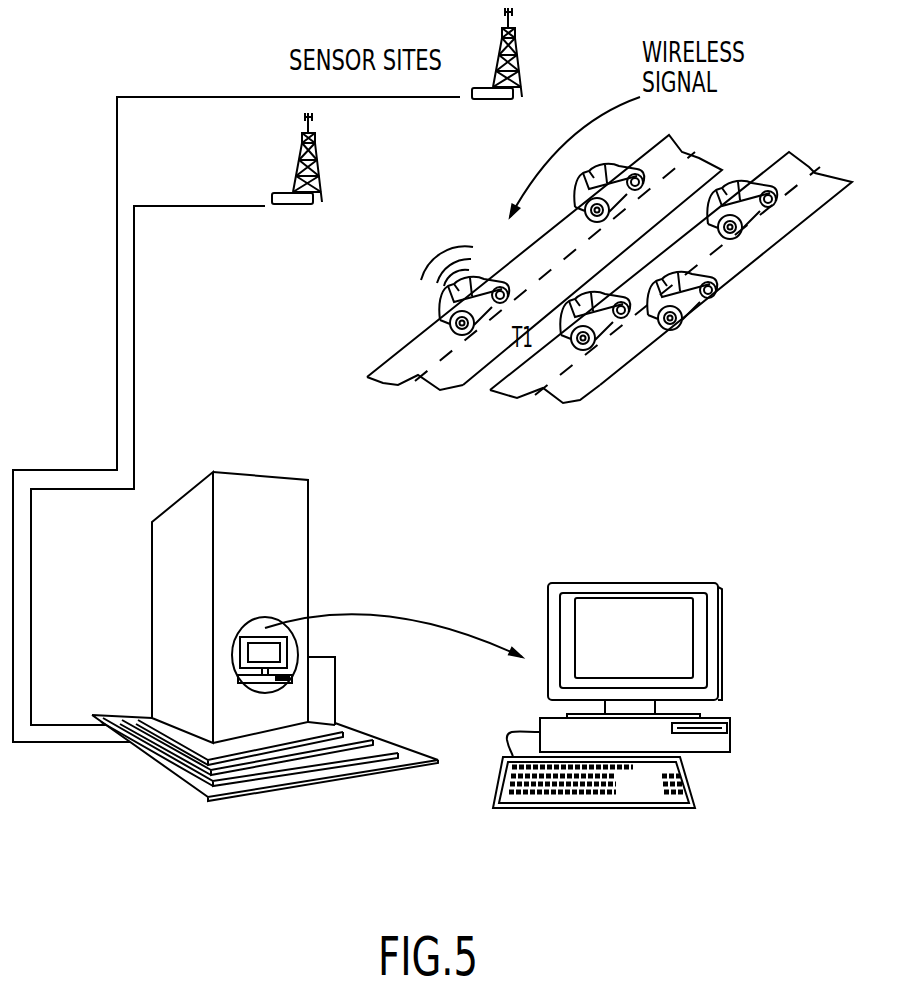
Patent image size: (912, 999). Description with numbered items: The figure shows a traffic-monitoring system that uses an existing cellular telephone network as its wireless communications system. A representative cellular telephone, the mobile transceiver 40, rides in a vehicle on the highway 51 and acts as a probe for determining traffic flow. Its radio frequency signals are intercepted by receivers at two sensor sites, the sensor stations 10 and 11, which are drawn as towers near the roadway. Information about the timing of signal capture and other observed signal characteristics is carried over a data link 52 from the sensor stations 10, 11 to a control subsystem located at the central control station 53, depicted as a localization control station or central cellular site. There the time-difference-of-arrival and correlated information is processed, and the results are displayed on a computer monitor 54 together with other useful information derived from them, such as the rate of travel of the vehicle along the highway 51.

The sensor station 10 is at (320, 168).
The sensor station 11 is at (516, 34).
The mobile transceiver 40 is at (424, 303).
The highway 51 is at (629, 370).
The data link 52 is at (117, 395).
The central control station 53 is at (308, 520).
The computer monitor 54 is at (721, 612).